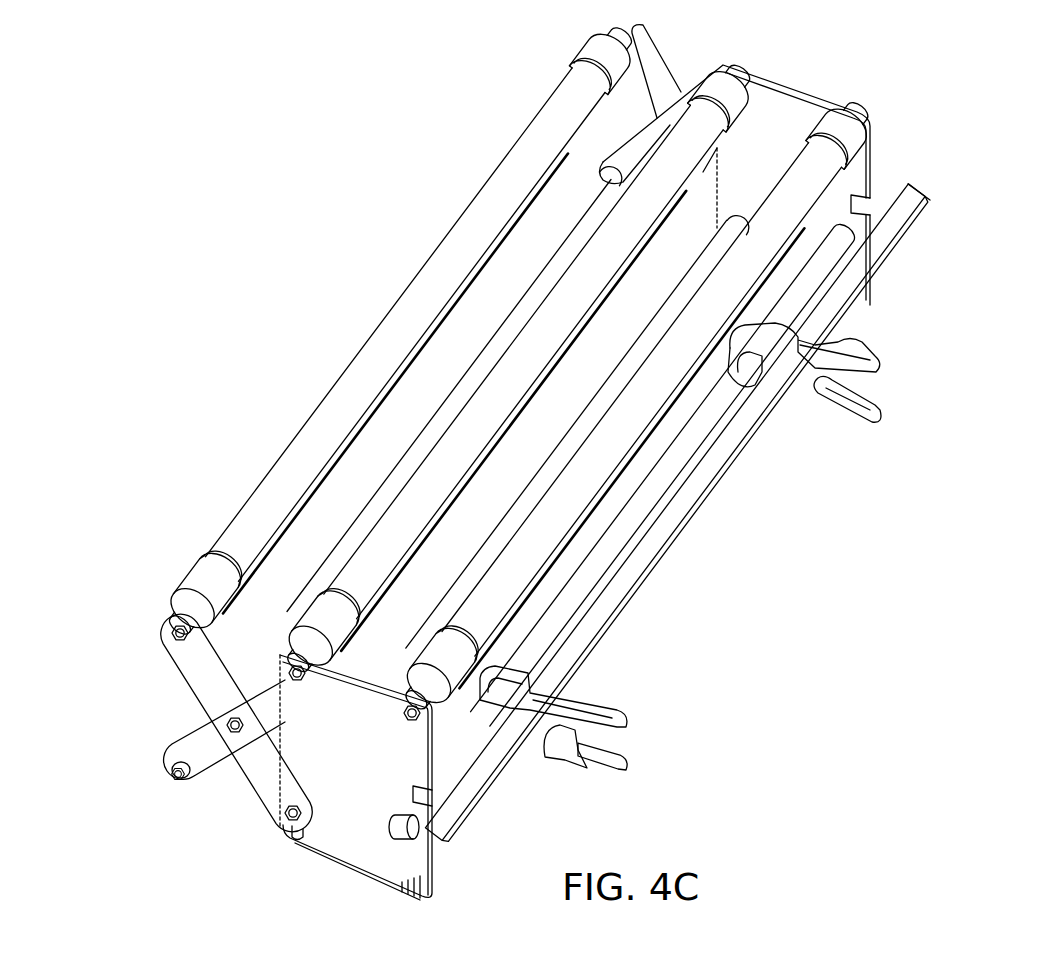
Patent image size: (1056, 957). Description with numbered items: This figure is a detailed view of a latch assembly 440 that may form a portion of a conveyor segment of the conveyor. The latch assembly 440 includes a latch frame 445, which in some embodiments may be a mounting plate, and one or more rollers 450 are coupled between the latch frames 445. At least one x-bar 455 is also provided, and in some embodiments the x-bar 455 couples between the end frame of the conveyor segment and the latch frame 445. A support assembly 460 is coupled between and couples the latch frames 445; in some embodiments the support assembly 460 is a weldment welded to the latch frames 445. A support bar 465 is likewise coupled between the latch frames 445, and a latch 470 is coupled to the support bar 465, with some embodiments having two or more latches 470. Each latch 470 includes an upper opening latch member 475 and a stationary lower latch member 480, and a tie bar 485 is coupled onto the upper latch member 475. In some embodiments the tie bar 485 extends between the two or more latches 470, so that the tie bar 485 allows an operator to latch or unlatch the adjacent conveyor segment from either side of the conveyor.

The latch assembly 440 is at (368, 96).
The latch frame 445 is at (792, 90).
The roller 450 is at (392, 318).
The x-bar 455 is at (180, 802).
The support assembly 460 is at (950, 198).
The support bar 465 is at (857, 245).
The latch 470 is at (634, 740).
The upper opening latch member 475 is at (583, 763).
The stationary lower latch member 480 is at (618, 760).
The tie bar 485 is at (696, 522).